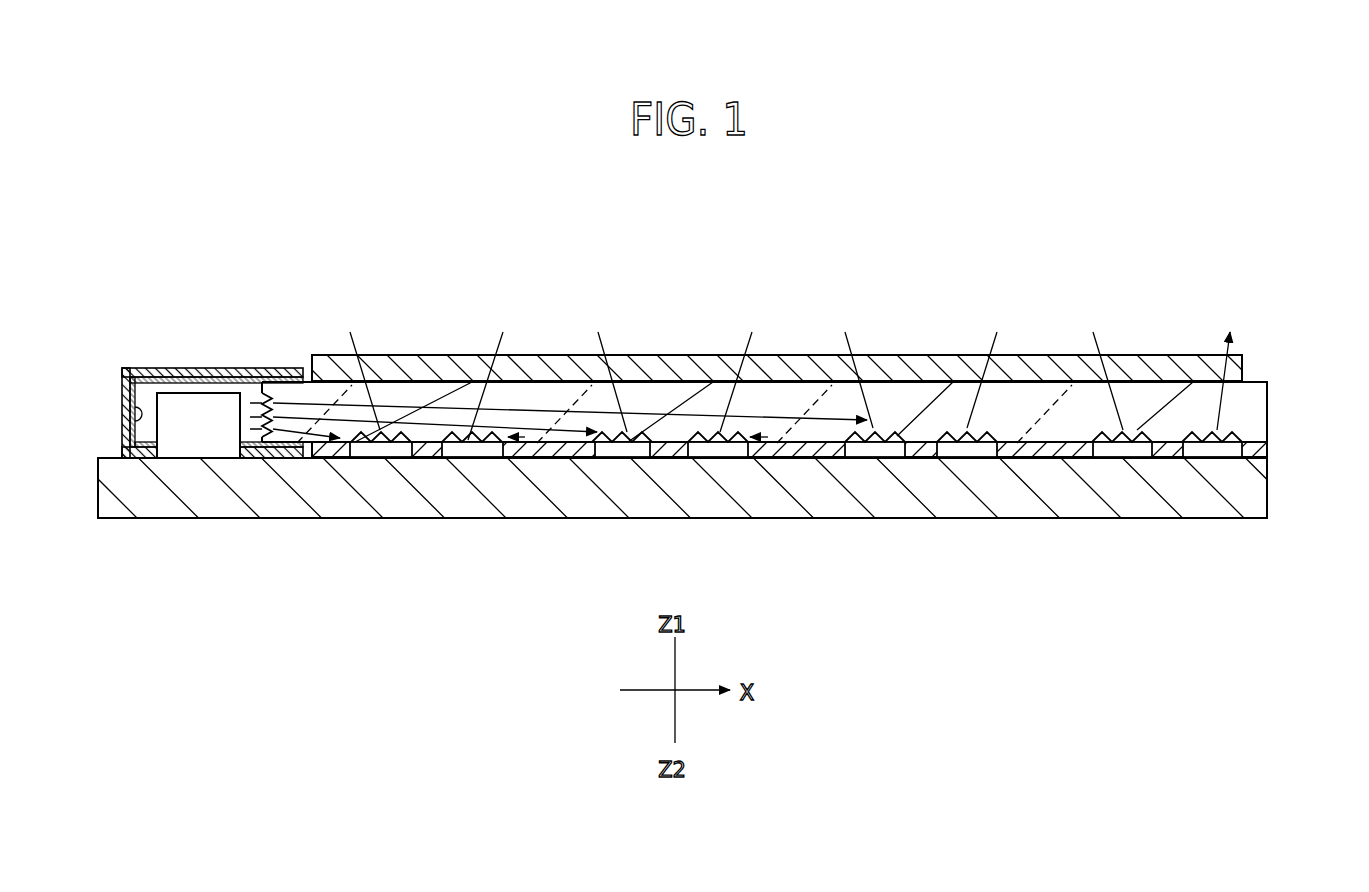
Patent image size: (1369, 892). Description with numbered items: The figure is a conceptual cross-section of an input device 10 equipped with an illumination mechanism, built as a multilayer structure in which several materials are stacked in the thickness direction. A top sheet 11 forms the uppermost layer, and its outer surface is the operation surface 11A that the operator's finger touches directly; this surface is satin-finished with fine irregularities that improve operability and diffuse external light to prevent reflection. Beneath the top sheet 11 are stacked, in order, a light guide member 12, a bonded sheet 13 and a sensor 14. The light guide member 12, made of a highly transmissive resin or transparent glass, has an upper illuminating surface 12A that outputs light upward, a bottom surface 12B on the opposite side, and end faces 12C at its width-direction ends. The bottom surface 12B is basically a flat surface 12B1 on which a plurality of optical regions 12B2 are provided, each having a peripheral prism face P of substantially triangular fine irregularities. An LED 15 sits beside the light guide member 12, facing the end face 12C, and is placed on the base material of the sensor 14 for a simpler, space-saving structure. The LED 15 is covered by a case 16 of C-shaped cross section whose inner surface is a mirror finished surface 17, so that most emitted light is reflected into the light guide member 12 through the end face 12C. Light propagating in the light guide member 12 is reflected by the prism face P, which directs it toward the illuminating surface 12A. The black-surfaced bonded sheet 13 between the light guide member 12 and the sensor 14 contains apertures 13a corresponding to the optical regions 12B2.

The input device 10 is at (158, 222).
The top sheet 11 is at (1249, 360).
The operation surface 11A is at (407, 353).
The light guide member 12 is at (1274, 426).
The illuminating surface 12A is at (795, 382).
The bottom surface 12B is at (1164, 445).
The flat surface 12B1 is at (1048, 445).
The optical regions 12B2 is at (383, 458).
The end face 12C is at (257, 448).
The bonded sheet 13 is at (1274, 449).
The apertures 13a is at (365, 452).
The sensor 14 is at (1274, 500).
The LED 15 is at (187, 453).
The case 16 is at (190, 368).
The mirror finished surface 17 is at (122, 424).
The prism face P is at (892, 422).